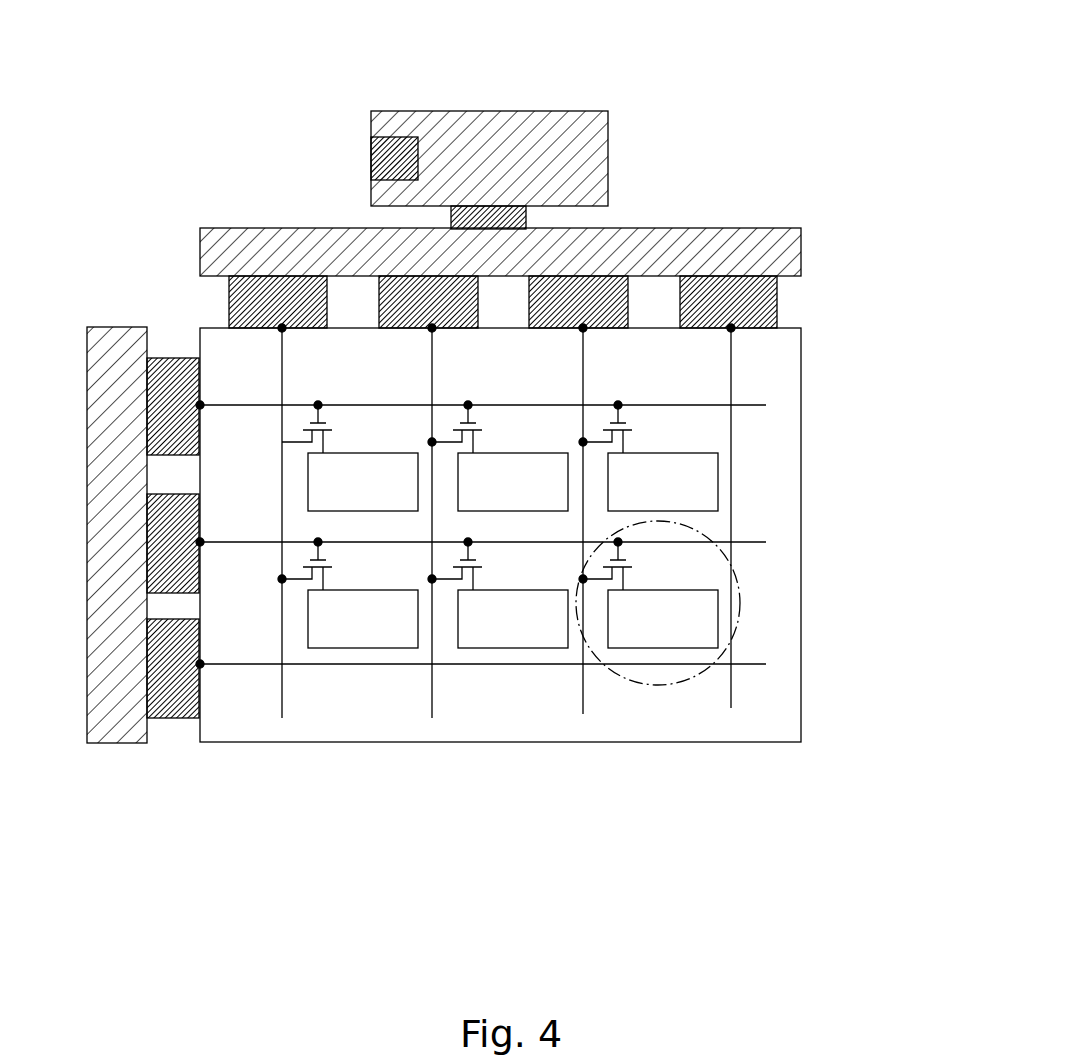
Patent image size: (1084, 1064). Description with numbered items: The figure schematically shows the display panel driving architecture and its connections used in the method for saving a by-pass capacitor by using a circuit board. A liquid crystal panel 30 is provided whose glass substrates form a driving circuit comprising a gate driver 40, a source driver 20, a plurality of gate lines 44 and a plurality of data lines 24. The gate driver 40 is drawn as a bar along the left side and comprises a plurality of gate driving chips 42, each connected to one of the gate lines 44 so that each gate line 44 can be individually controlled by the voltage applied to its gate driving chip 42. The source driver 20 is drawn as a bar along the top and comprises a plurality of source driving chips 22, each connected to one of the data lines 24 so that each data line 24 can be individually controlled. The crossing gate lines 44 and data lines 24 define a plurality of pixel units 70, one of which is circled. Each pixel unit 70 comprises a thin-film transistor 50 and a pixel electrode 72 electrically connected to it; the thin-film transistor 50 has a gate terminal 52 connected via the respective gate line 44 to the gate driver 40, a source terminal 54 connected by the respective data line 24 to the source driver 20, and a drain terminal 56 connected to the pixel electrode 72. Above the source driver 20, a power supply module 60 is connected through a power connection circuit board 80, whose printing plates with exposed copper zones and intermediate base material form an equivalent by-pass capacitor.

The source driver 20 is at (802, 252).
The source driving chips 22 is at (778, 302).
The data lines 24 is at (731, 368).
The liquid crystal panel 30 is at (801, 533).
The gate driver 40 is at (119, 327).
The gate driving chips 42 is at (175, 718).
The gate lines 44 is at (237, 664).
The thin-film transistor 50 is at (630, 428).
The gate terminal 52 is at (465, 549).
The source terminal 54 is at (457, 580).
The drain terminal 56 is at (472, 580).
The power supply module 60 is at (465, 111).
The pixel units 70 is at (733, 635).
The pixel electrode 72 is at (512, 647).
The power connection circuit board 80 is at (527, 218).